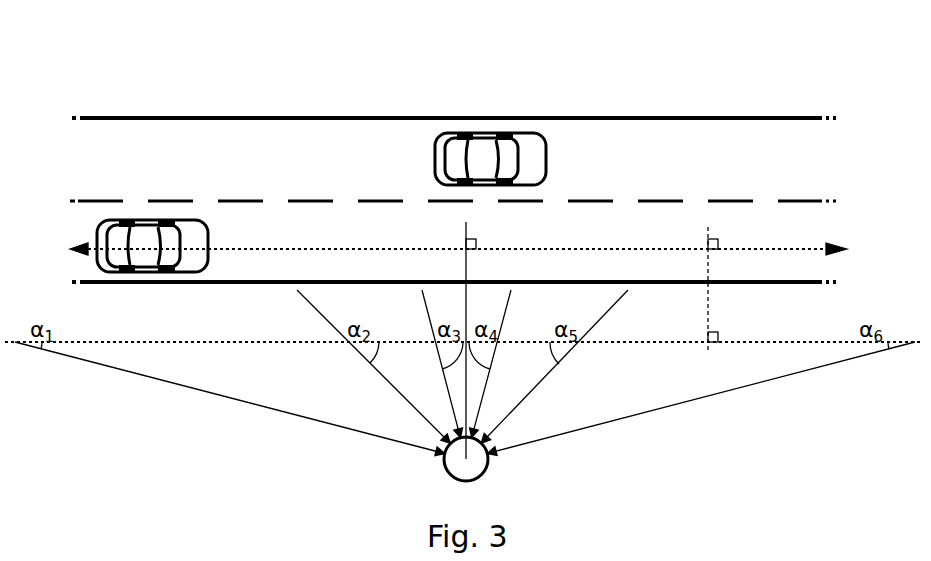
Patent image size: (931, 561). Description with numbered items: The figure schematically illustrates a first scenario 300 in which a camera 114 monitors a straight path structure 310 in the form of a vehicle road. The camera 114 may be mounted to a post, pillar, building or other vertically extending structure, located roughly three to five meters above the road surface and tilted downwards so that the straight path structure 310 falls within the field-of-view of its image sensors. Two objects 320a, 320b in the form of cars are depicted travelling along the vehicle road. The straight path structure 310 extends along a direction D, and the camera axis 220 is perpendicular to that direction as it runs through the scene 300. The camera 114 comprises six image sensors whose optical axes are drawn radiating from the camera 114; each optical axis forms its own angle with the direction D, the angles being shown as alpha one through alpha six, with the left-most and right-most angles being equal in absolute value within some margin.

The first scenario 300 is at (214, 58).
The straight path structure 310 is at (717, 118).
The object 320a is at (498, 132).
The object 320b is at (138, 218).
The camera axis 220 is at (466, 265).
The camera 114 is at (486, 470).